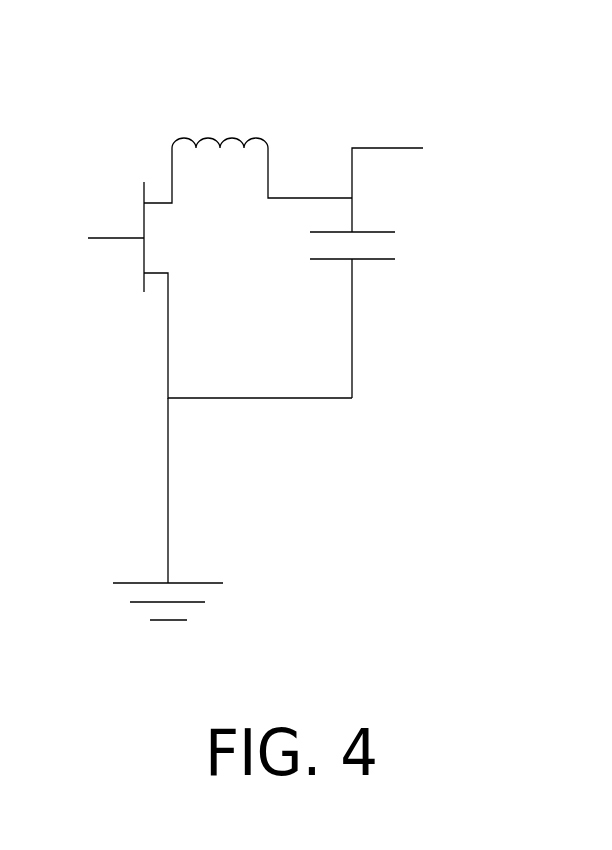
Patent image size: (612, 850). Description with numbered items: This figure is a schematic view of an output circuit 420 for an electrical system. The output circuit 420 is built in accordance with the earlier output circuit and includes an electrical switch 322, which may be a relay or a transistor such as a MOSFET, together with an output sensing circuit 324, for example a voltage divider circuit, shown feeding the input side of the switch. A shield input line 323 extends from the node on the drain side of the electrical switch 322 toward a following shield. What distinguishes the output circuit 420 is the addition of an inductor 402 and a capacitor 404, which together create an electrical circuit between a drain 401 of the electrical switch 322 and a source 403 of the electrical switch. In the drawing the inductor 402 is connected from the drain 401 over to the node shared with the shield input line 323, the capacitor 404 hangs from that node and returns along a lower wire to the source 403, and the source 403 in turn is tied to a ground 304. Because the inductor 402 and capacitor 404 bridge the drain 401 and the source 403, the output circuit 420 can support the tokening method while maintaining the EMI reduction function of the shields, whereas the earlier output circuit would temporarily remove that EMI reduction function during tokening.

The ground 304 is at (124, 648).
The electrical switch 322 is at (124, 282).
The shield input line 323 is at (393, 148).
The output sensing circuit 324 is at (95, 218).
The drain 401 is at (158, 203).
The inductor 402 is at (212, 148).
The source 403 is at (147, 273).
The capacitor 404 is at (364, 259).
The output circuit 420 is at (342, 95).